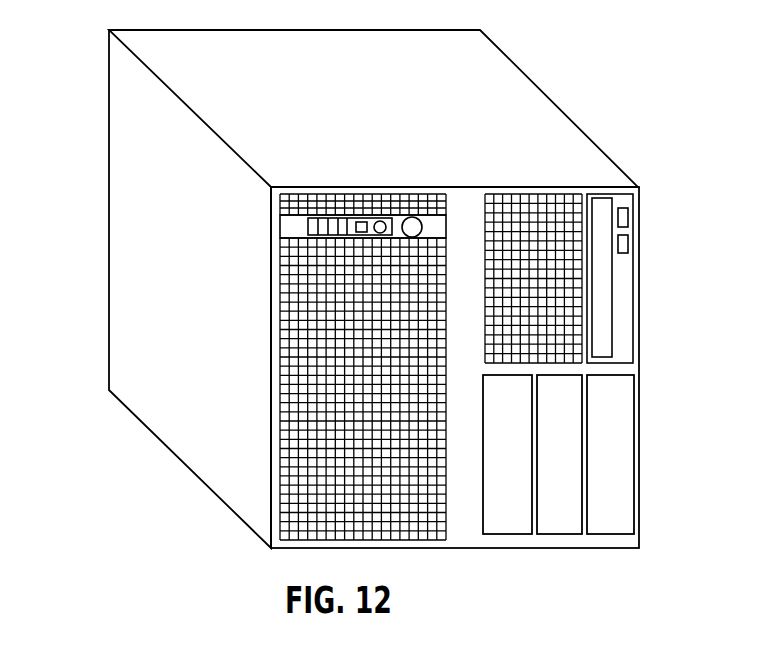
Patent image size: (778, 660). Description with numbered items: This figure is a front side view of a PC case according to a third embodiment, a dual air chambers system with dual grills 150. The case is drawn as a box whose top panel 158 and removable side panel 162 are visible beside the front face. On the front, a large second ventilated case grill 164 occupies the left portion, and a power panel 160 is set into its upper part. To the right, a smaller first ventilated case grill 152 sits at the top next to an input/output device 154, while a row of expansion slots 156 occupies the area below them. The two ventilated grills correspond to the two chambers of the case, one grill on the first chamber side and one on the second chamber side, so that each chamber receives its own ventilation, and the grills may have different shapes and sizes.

The dual air chambers system with dual grills 150 is at (644, 96).
The first ventilated case grill 152 is at (583, 300).
The input/output device 154 is at (635, 308).
The expansion slots 156 is at (637, 428).
The top panel 158 is at (505, 73).
The power panel 160 is at (277, 224).
The removable side panel 162 is at (124, 269).
The second ventilated case grill 164 is at (290, 524).